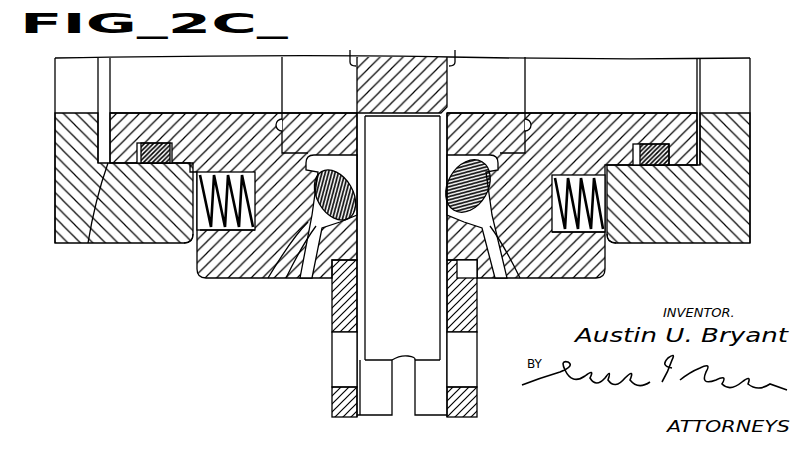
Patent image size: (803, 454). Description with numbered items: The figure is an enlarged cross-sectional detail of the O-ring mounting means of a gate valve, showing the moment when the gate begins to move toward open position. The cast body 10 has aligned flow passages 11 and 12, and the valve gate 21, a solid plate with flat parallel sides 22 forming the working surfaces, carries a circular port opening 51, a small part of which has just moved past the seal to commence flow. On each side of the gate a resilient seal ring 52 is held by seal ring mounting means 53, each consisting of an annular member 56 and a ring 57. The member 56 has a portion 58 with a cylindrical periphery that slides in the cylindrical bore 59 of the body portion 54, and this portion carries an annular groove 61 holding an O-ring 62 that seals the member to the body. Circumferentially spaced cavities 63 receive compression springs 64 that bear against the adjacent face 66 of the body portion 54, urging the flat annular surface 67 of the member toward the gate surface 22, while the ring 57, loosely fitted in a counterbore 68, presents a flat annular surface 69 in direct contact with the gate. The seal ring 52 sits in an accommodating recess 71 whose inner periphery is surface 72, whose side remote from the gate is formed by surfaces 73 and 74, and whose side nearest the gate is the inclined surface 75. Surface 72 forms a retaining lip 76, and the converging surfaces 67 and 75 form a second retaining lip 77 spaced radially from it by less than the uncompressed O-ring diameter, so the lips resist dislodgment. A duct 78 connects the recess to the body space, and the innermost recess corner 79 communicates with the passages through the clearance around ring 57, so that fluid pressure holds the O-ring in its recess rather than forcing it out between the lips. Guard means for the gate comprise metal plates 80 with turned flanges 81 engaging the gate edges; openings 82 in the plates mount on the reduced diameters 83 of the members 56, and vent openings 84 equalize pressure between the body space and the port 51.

The body 10 is at (56, 178).
The flow passage 11 is at (62, 97).
The flow passage 12 is at (740, 97).
The valve gate 21 is at (413, 62).
The flat parallel sides 22 is at (403, 48).
The opening 51 is at (332, 316).
The resilient seal ring 52 is at (440, 180).
The seal ring mounting means 53 is at (207, 112).
The body portion 54 is at (122, 236).
The annular member 56 is at (222, 125).
The ring 57 is at (316, 125).
The portion 58 is at (118, 120).
The cylindrical bore 59 is at (95, 236).
The annular groove 61 is at (142, 144).
The O-ring 62 is at (160, 143).
The cavity 63 is at (236, 250).
The compression spring 64 is at (207, 234).
The face 66 is at (182, 240).
The flat annular surface 67 is at (442, 240).
The counterbore 68 is at (277, 127).
The flat annular surface 69 is at (440, 134).
The accommodating recess 71 is at (291, 272).
The surface 72 is at (320, 160).
The surface 73 is at (303, 125).
The surface 74 is at (262, 278).
The surface 75 is at (444, 221).
The retaining lip 76 is at (440, 157).
The retaining lip 77 is at (440, 201).
The duct 78 is at (510, 272).
The recess corner 79 is at (478, 170).
The metal plate 80 is at (333, 400).
The turned flange 81 is at (420, 410).
The opening 82 is at (480, 278).
The reduced diameter 83 is at (330, 278).
The vent opening 84 is at (333, 348).